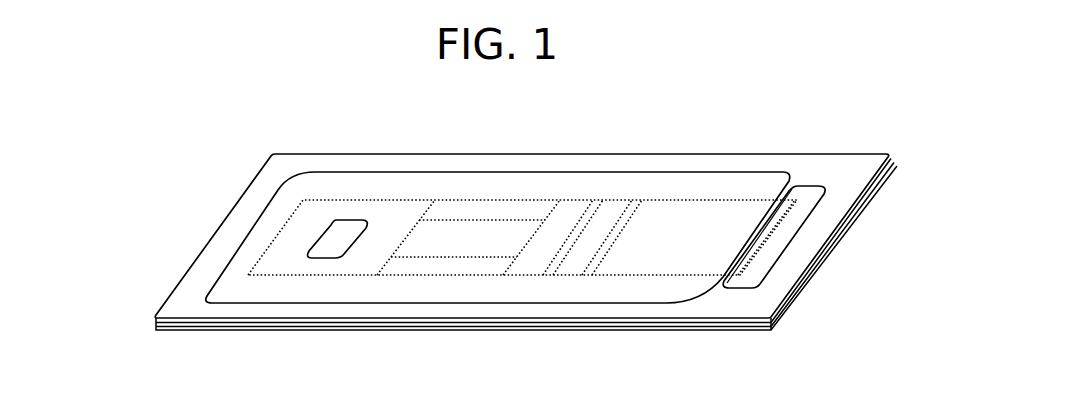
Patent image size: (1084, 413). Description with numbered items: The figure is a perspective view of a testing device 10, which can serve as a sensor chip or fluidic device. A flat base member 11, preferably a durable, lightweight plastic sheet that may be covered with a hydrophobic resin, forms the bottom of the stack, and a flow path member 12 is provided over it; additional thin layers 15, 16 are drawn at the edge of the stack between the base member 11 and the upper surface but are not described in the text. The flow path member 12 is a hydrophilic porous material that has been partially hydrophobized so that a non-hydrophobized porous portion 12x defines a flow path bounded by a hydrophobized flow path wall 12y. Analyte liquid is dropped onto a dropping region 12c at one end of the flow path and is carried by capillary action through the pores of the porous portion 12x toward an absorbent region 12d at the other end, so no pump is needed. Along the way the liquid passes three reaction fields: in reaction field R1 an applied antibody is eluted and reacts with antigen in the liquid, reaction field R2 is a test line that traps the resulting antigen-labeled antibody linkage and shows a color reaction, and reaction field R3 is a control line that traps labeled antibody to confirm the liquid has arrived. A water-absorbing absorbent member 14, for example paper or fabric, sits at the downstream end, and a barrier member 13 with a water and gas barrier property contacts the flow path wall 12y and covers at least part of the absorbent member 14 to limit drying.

The testing device 10 is at (810, 104).
The base member 11 is at (184, 331).
The flow path member 12 is at (217, 193).
The dropping region 12c is at (343, 228).
The absorbent region 12d is at (774, 227).
The porous portion 12x is at (660, 218).
The flow path wall 12y is at (423, 185).
The barrier member 13 is at (558, 172).
The absorbent member 14 is at (809, 215).
The intermediate layer 15 is at (154, 322).
The intermediate layer 16 is at (155, 329).
The reaction field R1 is at (452, 252).
The reaction field R2 is at (549, 272).
The reaction field R3 is at (585, 272).